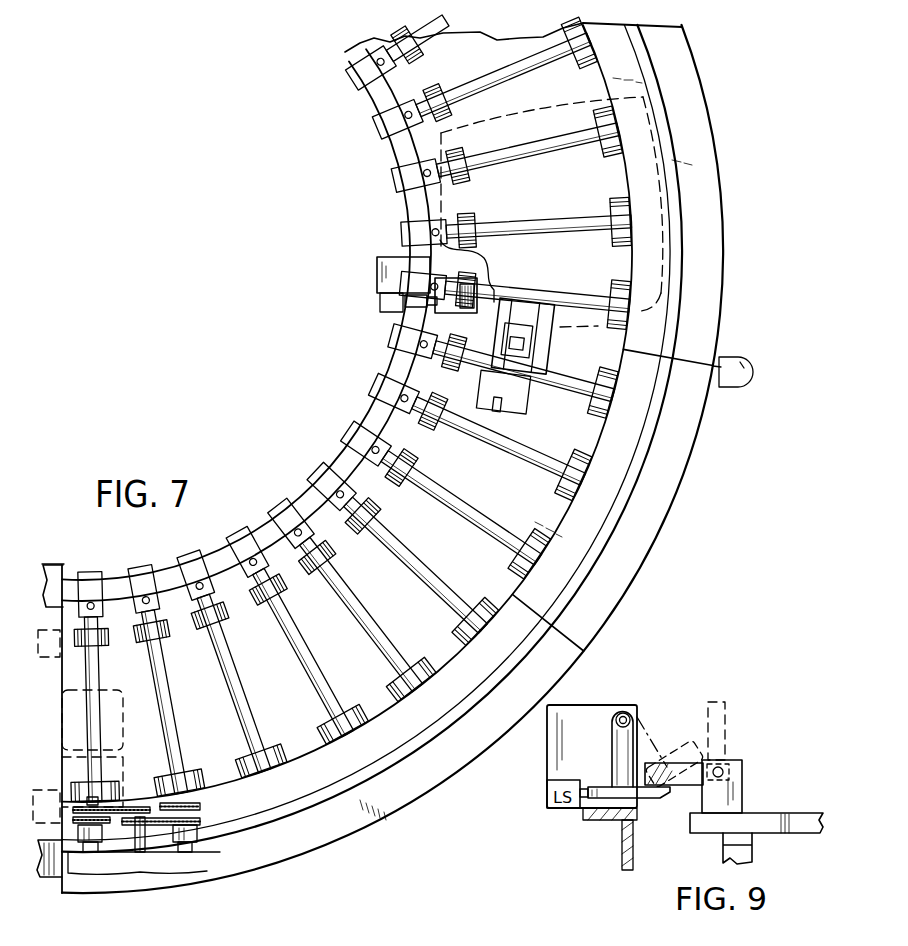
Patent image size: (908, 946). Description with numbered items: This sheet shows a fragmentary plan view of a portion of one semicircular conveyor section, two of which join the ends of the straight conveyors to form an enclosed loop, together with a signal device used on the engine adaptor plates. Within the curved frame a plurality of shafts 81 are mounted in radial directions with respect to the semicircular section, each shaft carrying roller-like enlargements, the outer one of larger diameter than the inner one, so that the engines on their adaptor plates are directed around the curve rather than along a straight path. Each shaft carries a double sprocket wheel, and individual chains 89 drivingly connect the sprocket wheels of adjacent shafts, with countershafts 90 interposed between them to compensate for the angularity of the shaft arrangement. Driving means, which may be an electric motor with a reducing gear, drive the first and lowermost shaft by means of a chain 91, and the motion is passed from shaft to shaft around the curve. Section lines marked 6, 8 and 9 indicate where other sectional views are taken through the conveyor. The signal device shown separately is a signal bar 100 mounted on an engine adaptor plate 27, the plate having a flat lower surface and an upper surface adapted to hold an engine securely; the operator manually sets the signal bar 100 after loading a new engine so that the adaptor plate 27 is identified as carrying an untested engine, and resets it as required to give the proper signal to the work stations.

In FIG. 7, the shaft 81 is at (301, 665).
In FIG. 7, the chain 89 is at (168, 852).
In FIG. 7, the countershaft 90 is at (132, 853).
In FIG. 7, the chain 91 is at (77, 828).
In FIG. 9, the signal bar 100 is at (661, 760).
In FIG. 9, the engine adaptor plate 27 is at (797, 815).
In FIG. 7, the section line 6- 6 is at (538, 250).
In FIG. 7, the section line 8- 8 is at (420, 377).
In FIG. 7, the section line 9- 9 is at (497, 320).